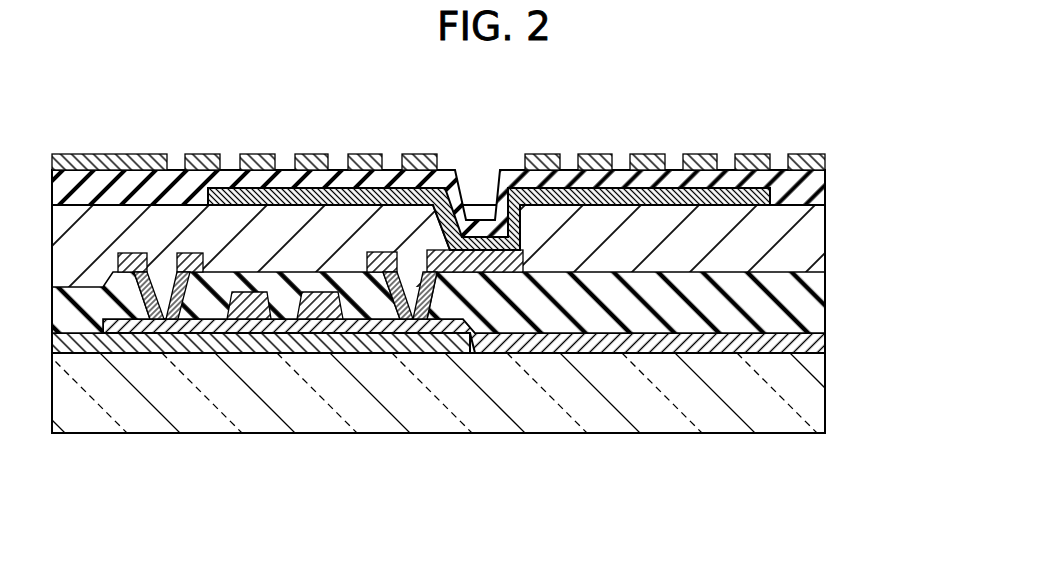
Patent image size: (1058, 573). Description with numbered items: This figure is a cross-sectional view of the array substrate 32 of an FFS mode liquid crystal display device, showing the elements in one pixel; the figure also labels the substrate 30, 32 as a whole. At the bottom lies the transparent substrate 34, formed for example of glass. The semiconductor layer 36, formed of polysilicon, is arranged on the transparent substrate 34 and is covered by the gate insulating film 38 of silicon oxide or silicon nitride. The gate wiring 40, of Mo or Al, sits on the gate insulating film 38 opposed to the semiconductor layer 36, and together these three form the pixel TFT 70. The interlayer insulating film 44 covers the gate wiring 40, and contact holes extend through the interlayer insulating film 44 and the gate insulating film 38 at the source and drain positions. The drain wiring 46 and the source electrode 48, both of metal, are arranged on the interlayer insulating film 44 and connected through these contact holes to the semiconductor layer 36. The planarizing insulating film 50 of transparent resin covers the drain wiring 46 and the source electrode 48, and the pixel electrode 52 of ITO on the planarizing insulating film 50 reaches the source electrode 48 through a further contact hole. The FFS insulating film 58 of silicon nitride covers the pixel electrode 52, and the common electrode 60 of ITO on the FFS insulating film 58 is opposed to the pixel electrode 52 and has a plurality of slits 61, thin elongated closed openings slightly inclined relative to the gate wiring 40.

The element substrate 30 is at (848, 376).
The array substrate 32 is at (438, 301).
The transparent substrate 34 is at (675, 395).
The semiconductor layer 36 is at (369, 340).
The gate insulating film 38 is at (288, 323).
The gate wiring 40 is at (240, 335).
The interlayer insulating film 44 is at (762, 313).
The drain wiring 46 is at (157, 328).
The source electrode 48 is at (505, 257).
The planarizing insulating film 50 is at (610, 248).
The pixel electrode 52 is at (727, 170).
The FFS insulating film 58 is at (813, 185).
The common electrode 60 is at (805, 160).
The slits 61 is at (396, 149).
The pixel TFT 70 is at (256, 362).